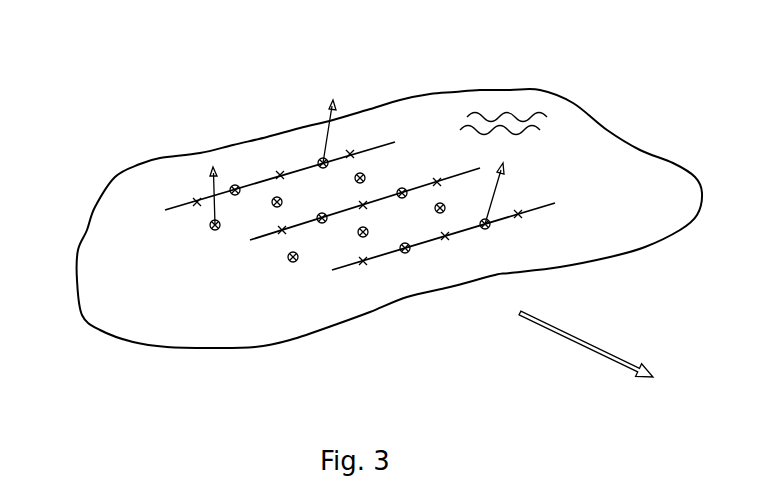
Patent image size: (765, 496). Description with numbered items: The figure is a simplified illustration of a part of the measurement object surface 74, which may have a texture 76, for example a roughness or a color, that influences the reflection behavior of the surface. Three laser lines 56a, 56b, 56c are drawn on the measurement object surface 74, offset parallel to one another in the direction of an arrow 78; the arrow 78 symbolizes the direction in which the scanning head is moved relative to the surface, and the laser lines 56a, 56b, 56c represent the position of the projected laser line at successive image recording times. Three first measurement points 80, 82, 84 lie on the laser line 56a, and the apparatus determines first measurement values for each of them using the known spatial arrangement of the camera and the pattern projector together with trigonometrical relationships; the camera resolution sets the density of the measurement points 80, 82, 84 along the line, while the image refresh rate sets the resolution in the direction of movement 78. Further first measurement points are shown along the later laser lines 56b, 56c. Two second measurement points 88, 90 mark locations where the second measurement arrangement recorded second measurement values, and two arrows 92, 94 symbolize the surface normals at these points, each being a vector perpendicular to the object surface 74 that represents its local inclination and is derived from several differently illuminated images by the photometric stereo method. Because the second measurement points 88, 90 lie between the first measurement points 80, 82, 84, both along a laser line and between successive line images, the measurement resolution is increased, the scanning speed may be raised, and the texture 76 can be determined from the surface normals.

The measurement object surface 74 is at (640, 150).
The texture 76 is at (518, 117).
The arrow 78 is at (543, 330).
The first measurement point 80 is at (280, 173).
The first measurement point 82 is at (350, 153).
The first measurement point 84 is at (193, 200).
The second measurement point 88 is at (317, 160).
The second measurement point 90 is at (210, 227).
The surface normal arrow 92 is at (342, 120).
The surface normal arrow 94 is at (203, 172).
The laser line 56a is at (163, 210).
The laser line 56b is at (255, 243).
The laser line 56c is at (345, 270).